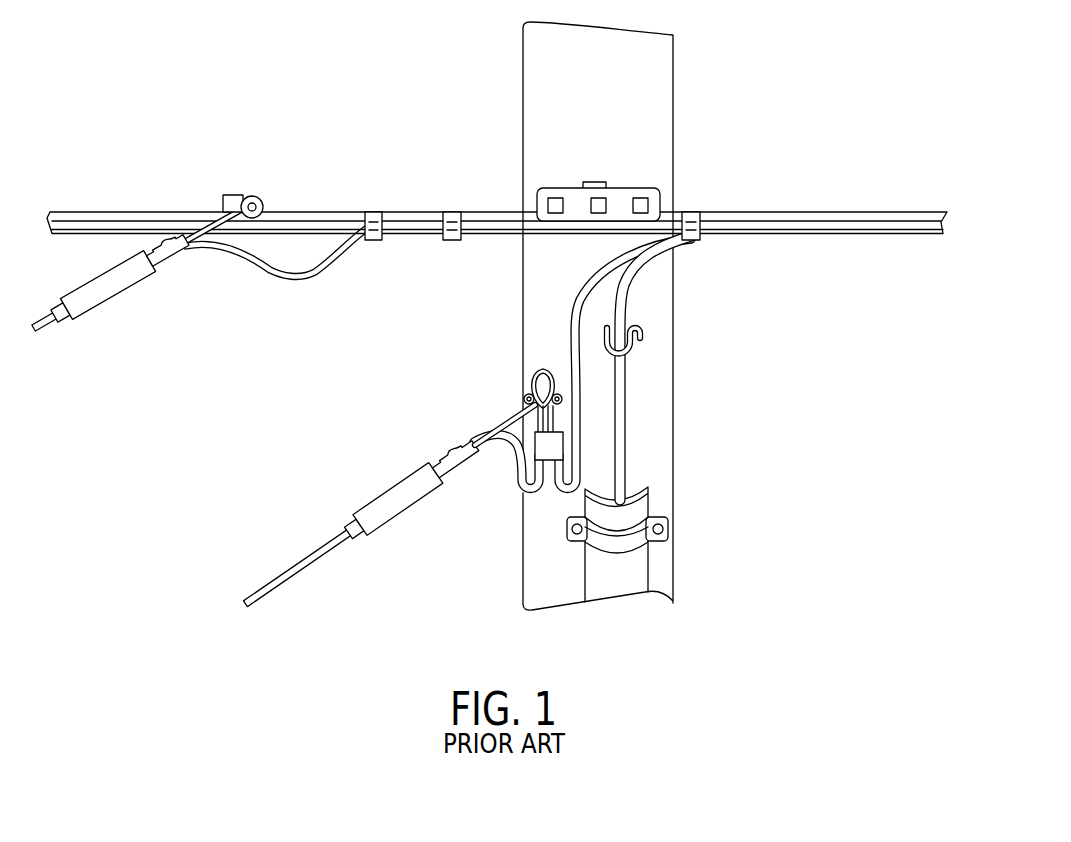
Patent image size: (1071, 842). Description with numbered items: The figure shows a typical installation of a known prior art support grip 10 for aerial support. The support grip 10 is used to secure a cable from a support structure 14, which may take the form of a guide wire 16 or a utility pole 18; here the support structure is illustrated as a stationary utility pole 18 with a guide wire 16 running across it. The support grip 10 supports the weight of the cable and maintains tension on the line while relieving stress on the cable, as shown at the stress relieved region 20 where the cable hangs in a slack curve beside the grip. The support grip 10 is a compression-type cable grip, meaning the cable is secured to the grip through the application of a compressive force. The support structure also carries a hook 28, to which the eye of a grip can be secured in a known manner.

The support grip 10 is at (270, 449).
The support structure 14 is at (124, 205).
The guide wire 16 is at (292, 211).
The utility pole 18 is at (660, 102).
The stress relieved region 20 is at (289, 281).
The hook 28 is at (538, 372).